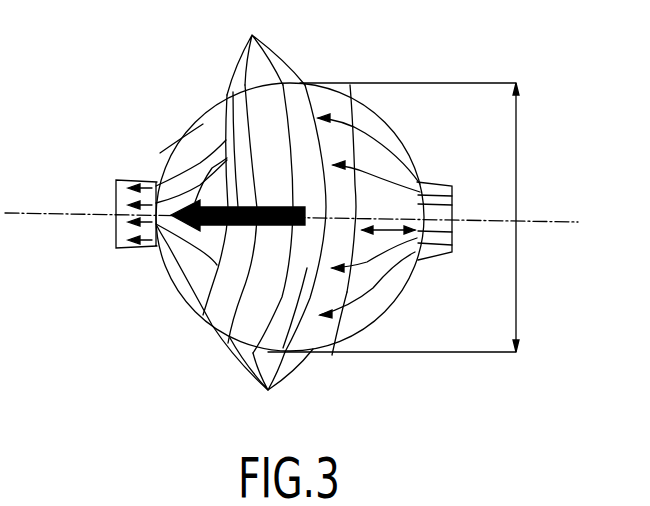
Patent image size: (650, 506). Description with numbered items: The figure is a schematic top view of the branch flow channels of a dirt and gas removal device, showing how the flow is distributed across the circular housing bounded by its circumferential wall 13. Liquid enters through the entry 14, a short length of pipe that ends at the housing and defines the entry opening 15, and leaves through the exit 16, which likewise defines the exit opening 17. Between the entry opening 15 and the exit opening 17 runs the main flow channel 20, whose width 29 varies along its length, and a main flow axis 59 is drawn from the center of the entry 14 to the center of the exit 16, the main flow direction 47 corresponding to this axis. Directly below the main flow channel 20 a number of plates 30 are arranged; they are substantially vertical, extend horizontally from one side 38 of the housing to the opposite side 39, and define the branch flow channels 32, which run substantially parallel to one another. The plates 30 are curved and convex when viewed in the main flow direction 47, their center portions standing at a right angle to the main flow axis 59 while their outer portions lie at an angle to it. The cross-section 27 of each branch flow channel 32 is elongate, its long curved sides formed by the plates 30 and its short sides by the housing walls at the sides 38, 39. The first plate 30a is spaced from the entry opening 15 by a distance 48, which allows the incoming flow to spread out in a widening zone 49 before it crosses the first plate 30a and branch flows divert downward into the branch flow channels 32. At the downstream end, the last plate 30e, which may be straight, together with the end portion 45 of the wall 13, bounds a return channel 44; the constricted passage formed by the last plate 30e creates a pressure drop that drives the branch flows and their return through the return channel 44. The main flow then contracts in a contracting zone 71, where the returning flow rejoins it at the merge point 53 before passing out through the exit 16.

The wall 13 is at (350, 85).
The entry 14 is at (441, 182).
The entry opening 15 is at (414, 180).
The exit 16 is at (124, 179).
The exit opening 17 is at (118, 226).
The main flow channel 20 is at (284, 199).
The cross-section 27 is at (243, 285).
The width 29 is at (520, 178).
The plates 30 is at (268, 390).
The first plate 30a is at (354, 152).
The last plate 30e is at (203, 315).
The branch flow channels 32 is at (252, 35).
The side 38 is at (332, 355).
The opposite side 39 is at (311, 83).
The return channel 44 is at (191, 127).
The end portion 45 is at (200, 225).
The main flow direction 47 is at (222, 125).
The distance 48 is at (385, 232).
The widening zone 49 is at (383, 230).
The merge point 53 is at (116, 196).
The main flow axis 59 is at (116, 212).
The contracting zone 71 is at (158, 248).